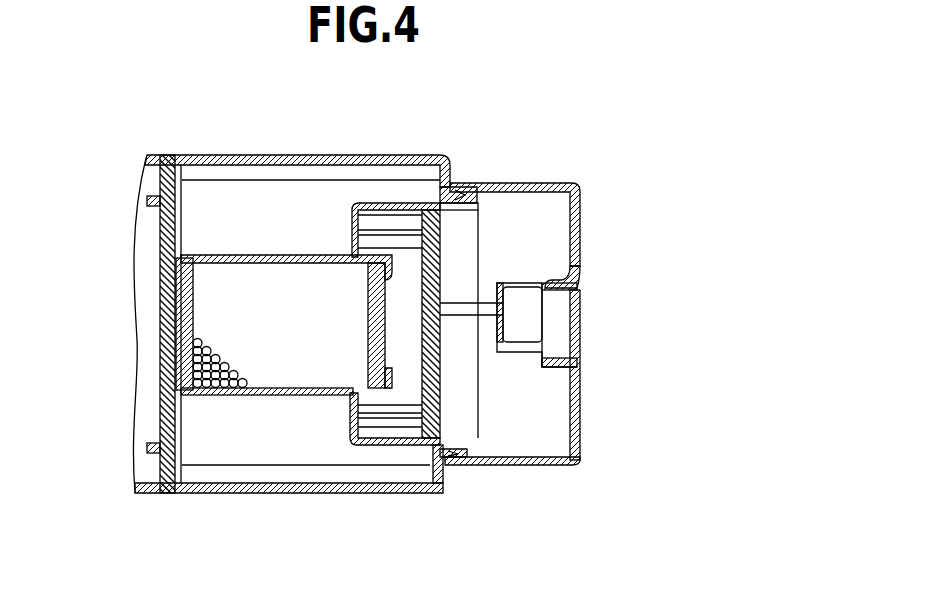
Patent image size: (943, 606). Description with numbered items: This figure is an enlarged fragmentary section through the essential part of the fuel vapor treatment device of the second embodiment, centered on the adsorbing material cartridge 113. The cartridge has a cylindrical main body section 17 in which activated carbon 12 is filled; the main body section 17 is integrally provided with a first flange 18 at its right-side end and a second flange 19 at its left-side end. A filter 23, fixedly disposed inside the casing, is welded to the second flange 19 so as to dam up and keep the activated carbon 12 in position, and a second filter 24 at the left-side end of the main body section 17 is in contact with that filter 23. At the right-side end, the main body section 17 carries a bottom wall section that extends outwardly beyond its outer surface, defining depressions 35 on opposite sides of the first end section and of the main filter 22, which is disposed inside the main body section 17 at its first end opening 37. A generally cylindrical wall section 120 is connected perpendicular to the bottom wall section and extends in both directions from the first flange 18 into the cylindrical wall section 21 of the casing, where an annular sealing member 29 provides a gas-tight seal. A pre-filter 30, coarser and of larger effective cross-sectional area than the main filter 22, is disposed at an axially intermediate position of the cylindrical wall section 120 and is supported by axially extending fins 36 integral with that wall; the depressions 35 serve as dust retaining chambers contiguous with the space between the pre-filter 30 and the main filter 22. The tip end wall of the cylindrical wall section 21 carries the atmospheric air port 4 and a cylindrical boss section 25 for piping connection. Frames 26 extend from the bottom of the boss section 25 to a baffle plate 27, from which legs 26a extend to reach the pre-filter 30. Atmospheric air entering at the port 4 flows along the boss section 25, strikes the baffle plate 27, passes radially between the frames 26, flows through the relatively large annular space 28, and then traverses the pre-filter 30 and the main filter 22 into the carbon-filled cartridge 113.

The adsorbing material cartridge 113 is at (260, 168).
The atmospheric air port 4 is at (579, 297).
The activated carbon 12 is at (222, 358).
The cartridge main body section 17 is at (255, 397).
The first flange 18 is at (423, 493).
The second flange 19 is at (197, 482).
The cylindrical wall section 21 is at (543, 183).
The main filter 22 is at (375, 340).
The filter 23 is at (167, 258).
The second filter 24 is at (185, 295).
The cylindrical boss section 25 is at (553, 267).
The frames 26 is at (522, 343).
The legs 26a is at (548, 256).
The baffle plate 27 is at (493, 312).
The annular space 28 is at (511, 433).
The annular sealing member 29 is at (463, 193).
The pre-filter 30 is at (426, 207).
The depressions 35 is at (358, 204).
The fins 36 is at (403, 262).
The end opening 37 is at (392, 370).
The cylindrical wall section 120 is at (480, 207).